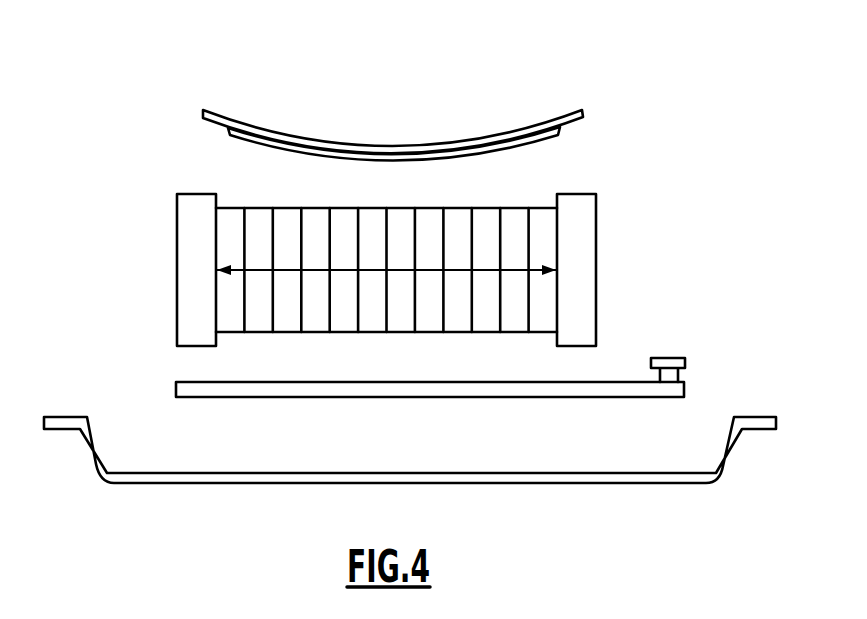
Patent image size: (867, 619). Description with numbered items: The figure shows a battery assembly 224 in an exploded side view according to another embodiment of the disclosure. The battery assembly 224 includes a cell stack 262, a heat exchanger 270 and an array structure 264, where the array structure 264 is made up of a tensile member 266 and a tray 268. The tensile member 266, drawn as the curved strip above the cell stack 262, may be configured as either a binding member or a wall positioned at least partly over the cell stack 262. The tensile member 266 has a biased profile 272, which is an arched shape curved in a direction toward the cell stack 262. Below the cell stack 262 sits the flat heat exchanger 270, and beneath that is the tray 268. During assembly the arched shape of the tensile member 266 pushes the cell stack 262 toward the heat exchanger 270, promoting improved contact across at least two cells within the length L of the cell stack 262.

The battery assembly 224 is at (430, 110).
The cell stack 262 is at (328, 266).
The array structure 264 is at (454, 112).
The tensile member 266 is at (505, 135).
The tray 268 is at (431, 483).
The heat exchanger 270 is at (683, 388).
The biased profile 272 is at (314, 138).
The length of the cell stack L is at (449, 268).